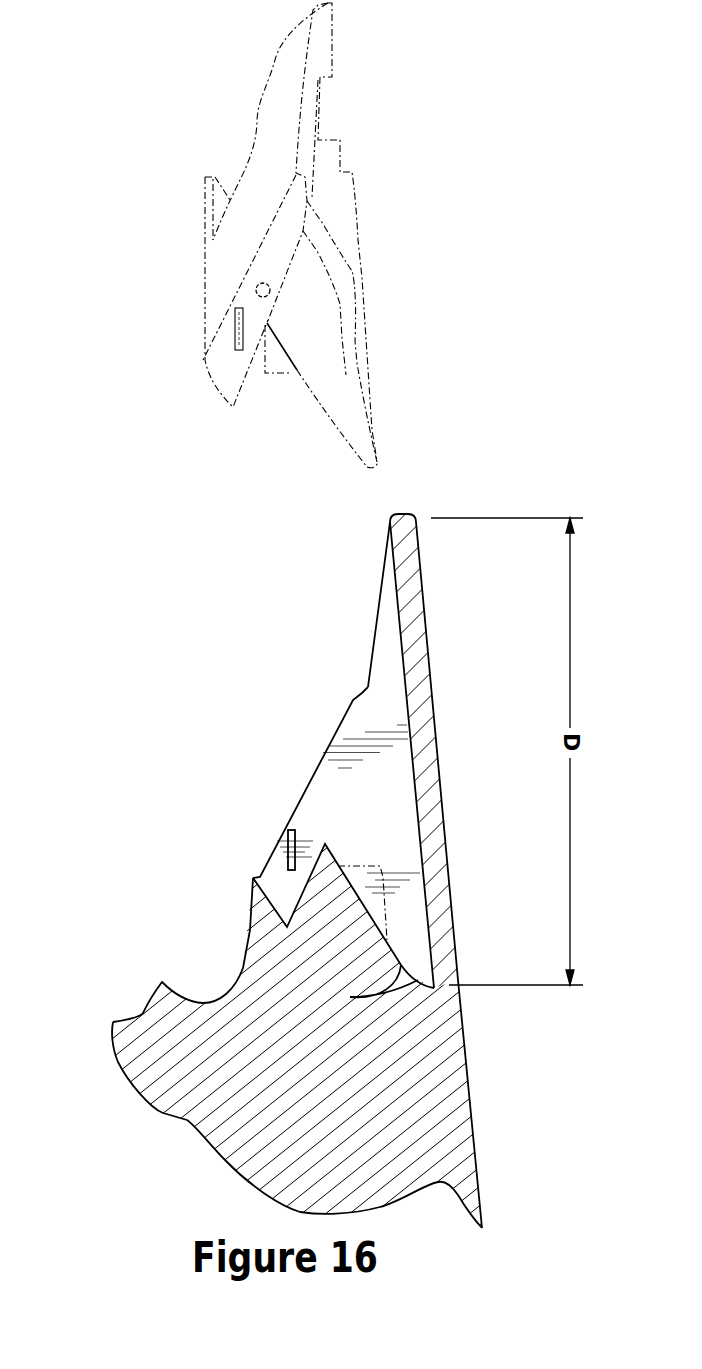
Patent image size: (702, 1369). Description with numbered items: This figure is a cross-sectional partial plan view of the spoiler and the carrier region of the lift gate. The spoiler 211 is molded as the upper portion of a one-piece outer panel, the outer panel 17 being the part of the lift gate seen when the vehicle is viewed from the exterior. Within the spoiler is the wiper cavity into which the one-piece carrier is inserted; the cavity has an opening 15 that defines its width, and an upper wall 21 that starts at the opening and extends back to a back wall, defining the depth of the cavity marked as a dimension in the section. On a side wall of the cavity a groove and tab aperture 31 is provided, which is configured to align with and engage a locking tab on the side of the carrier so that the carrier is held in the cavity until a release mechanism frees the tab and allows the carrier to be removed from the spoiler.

The opening 15 is at (334, 644).
The upper wall 21 is at (413, 798).
The tab aperture 31 is at (285, 840).
The outer panel 17 is at (350, 997).
The spoiler 211 is at (227, 1080).